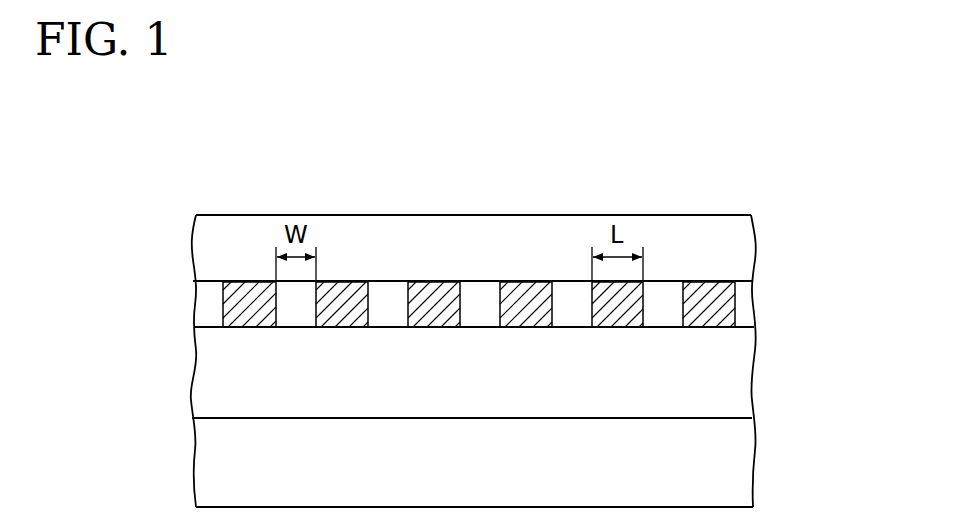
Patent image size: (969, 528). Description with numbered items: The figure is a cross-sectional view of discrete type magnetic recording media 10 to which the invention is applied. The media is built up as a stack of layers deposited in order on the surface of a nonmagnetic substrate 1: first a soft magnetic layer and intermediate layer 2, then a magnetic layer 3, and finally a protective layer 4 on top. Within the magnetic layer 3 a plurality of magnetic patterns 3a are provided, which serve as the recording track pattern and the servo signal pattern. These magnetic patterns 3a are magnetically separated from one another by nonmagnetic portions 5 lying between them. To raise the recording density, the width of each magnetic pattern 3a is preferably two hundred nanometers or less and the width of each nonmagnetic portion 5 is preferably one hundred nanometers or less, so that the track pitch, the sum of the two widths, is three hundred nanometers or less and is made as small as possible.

The magnetic recording media 10 is at (202, 196).
The nonmagnetic substrate 1 is at (745, 463).
The soft magnetic layer and intermediate layer 2 is at (745, 373).
The magnetic layer 3 is at (748, 298).
The magnetic pattern 3a is at (293, 315).
The protective layer 4 is at (743, 247).
The nonmagnetic portion 5 is at (250, 316).